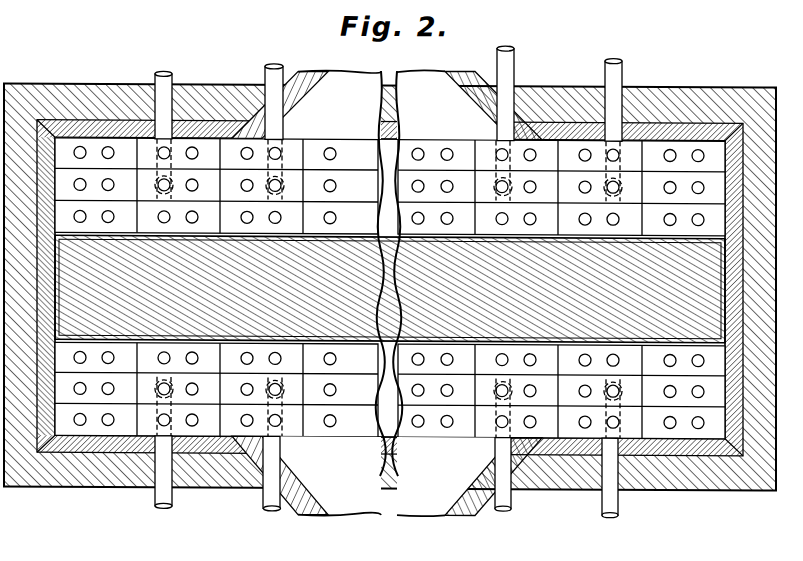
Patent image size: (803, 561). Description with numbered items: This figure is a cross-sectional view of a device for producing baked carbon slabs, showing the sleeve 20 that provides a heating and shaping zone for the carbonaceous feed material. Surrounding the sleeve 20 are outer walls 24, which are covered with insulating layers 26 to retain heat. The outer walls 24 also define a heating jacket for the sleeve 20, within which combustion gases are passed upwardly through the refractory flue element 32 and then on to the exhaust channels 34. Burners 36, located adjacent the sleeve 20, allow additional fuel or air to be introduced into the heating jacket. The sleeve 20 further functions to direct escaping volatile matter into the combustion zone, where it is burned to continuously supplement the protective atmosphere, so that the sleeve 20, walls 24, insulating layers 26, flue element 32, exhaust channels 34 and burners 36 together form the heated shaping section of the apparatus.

The sleeve 20 is at (390, 267).
The outer walls 24 is at (110, 124).
The insulating layers 26 is at (85, 83).
The refractory flue element 32 is at (446, 136).
The exhaust channels 34 is at (350, 116).
The burners 36 is at (264, 70).